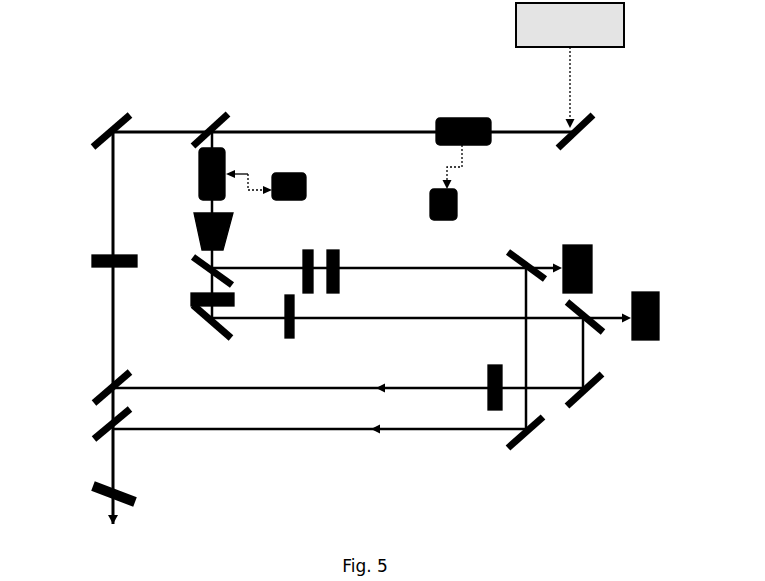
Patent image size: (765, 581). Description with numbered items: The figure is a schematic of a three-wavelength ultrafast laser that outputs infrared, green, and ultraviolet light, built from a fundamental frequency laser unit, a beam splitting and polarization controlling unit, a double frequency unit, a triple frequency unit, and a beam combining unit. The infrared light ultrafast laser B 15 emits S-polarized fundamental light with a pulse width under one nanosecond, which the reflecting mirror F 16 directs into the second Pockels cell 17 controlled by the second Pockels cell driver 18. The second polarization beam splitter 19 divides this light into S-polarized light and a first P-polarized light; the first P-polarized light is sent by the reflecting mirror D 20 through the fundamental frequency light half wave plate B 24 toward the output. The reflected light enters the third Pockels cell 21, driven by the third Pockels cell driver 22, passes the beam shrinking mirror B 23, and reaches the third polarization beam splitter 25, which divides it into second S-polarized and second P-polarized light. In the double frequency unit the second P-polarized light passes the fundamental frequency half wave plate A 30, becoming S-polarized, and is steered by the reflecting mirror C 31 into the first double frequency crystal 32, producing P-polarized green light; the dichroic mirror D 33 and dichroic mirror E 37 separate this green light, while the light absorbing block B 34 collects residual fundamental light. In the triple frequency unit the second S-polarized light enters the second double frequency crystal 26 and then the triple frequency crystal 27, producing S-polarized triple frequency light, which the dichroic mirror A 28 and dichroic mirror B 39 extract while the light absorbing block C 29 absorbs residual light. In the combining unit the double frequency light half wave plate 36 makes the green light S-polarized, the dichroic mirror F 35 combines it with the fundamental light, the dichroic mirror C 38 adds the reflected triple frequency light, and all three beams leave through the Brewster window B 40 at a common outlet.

The infrared light ultrafast laser B 15 is at (627, 30).
The reflecting mirror F 16 is at (585, 133).
The second Pockels cell 17 is at (436, 118).
The second Pockels cell driver 18 is at (429, 207).
The second polarization beam splitter 19 is at (203, 125).
The reflecting mirror D 20 is at (115, 124).
The third Pockels cell 21 is at (198, 172).
The third Pockels cell driver 22 is at (284, 175).
The beam shrinking mirror B 23 is at (197, 214).
The fundamental frequency light half wave plate B 24 is at (92, 256).
The third polarization beam splitter 25 is at (194, 258).
The second double frequency crystal 26 is at (302, 259).
The triple frequency crystal 27 is at (341, 257).
The dichroic mirror A 28 is at (507, 254).
The light absorbing block C 29 is at (562, 250).
The fundamental frequency half wave plate A 30 is at (192, 296).
The reflecting mirror C 31 is at (195, 318).
The first double frequency crystal 32 is at (296, 308).
The dichroic mirror D 33 is at (564, 306).
The light absorbing block B 34 is at (650, 342).
The dichroic mirror F 35 is at (101, 387).
The double frequency light half wave plate 36 is at (487, 373).
The dichroic mirror E 37 is at (597, 387).
The dichroic mirror C 38 is at (97, 431).
The dichroic mirror B 39 is at (545, 430).
The Brewster window B 40 is at (93, 488).